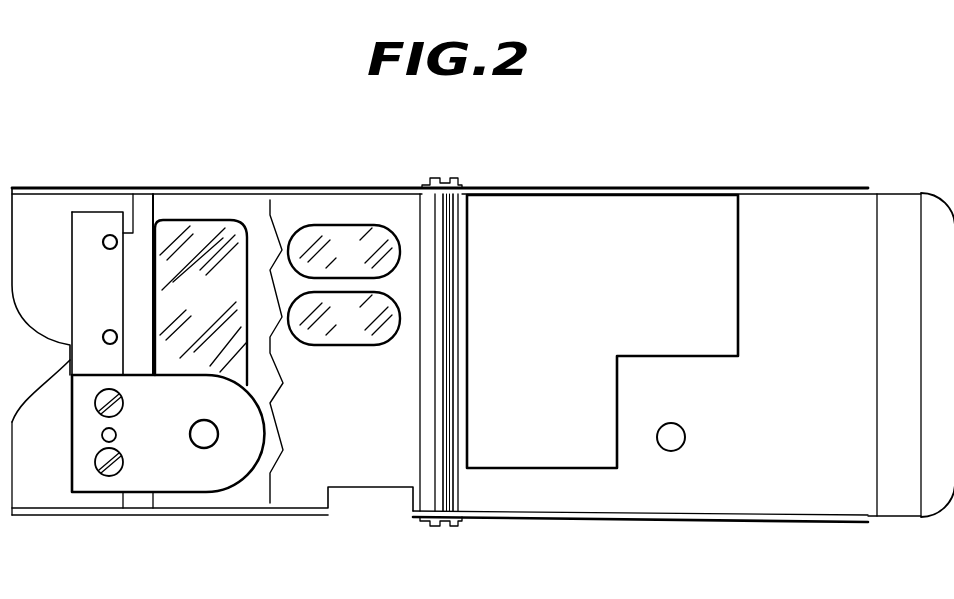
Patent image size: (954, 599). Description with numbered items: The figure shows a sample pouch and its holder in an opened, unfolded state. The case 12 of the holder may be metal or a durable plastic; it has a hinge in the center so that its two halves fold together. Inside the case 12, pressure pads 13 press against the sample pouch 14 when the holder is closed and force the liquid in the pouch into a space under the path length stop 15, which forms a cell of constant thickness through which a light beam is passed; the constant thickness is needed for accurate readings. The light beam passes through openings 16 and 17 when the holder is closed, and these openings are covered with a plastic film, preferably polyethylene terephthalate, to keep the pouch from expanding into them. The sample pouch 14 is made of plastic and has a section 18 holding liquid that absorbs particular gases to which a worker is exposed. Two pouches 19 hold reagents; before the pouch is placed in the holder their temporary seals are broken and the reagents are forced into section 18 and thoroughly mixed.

The case 12 is at (803, 371).
The pressure pads 13 is at (663, 358).
The sample pouch 14 is at (356, 401).
The path length stop 15 is at (175, 473).
The opening 16 is at (212, 447).
The opening 17 is at (685, 437).
The section 18 is at (209, 307).
The pouches 19 is at (358, 261).